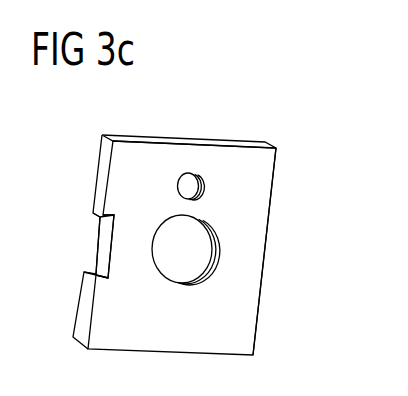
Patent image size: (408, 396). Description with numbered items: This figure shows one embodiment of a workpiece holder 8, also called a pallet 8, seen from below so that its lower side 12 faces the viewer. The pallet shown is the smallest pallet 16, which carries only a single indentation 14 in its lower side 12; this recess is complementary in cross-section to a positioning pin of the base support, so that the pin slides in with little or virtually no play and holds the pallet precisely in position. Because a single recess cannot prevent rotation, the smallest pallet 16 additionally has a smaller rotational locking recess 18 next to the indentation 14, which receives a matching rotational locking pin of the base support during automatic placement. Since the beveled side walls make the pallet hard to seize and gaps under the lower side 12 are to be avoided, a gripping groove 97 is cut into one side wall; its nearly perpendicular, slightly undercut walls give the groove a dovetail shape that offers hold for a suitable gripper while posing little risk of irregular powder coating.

The workpiece holder 8 is at (246, 128).
The lower side 12 is at (118, 316).
The indentation 14 is at (193, 245).
The smallest pallet 16 is at (267, 327).
The rotational locking recess 18 is at (190, 184).
The gripping groove 97 is at (100, 242).